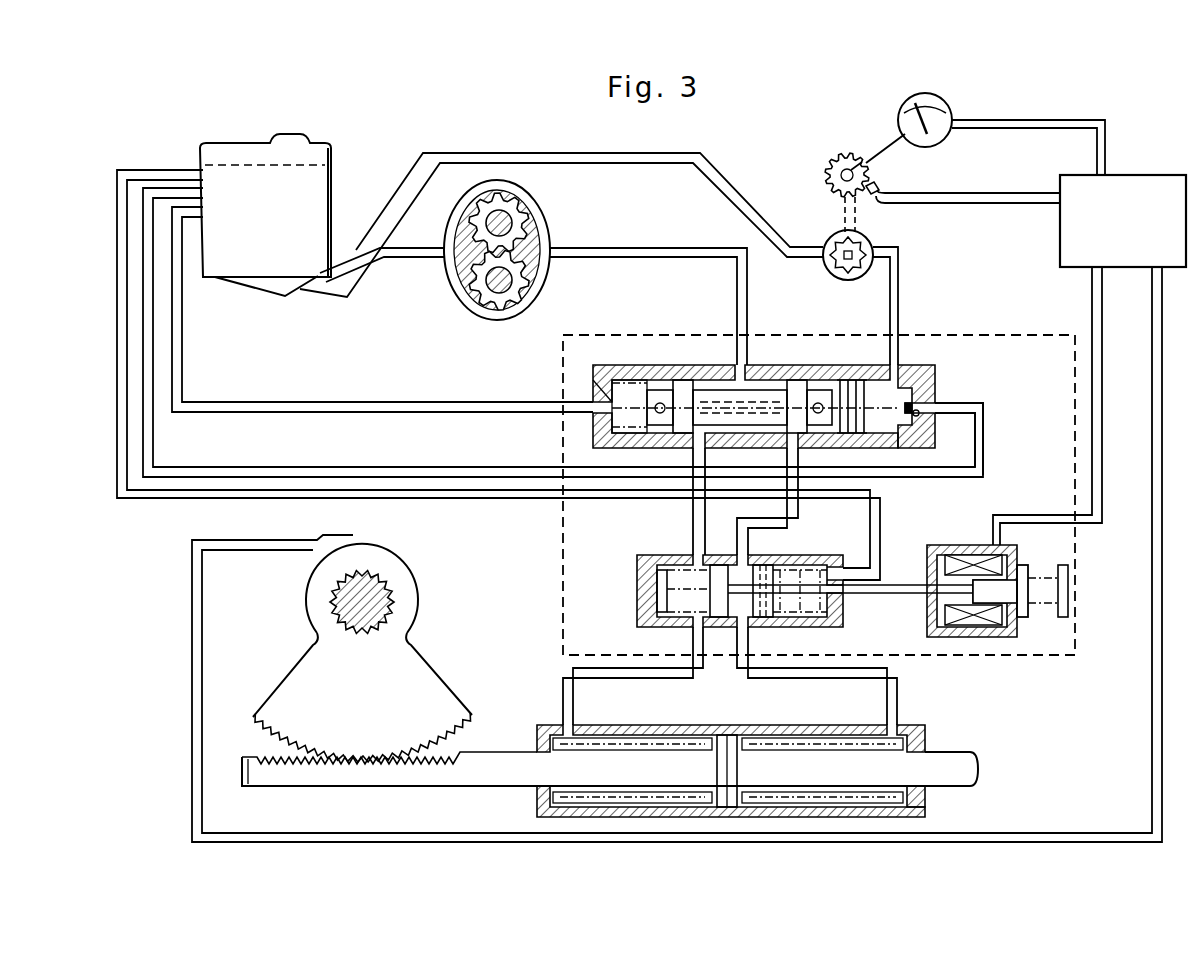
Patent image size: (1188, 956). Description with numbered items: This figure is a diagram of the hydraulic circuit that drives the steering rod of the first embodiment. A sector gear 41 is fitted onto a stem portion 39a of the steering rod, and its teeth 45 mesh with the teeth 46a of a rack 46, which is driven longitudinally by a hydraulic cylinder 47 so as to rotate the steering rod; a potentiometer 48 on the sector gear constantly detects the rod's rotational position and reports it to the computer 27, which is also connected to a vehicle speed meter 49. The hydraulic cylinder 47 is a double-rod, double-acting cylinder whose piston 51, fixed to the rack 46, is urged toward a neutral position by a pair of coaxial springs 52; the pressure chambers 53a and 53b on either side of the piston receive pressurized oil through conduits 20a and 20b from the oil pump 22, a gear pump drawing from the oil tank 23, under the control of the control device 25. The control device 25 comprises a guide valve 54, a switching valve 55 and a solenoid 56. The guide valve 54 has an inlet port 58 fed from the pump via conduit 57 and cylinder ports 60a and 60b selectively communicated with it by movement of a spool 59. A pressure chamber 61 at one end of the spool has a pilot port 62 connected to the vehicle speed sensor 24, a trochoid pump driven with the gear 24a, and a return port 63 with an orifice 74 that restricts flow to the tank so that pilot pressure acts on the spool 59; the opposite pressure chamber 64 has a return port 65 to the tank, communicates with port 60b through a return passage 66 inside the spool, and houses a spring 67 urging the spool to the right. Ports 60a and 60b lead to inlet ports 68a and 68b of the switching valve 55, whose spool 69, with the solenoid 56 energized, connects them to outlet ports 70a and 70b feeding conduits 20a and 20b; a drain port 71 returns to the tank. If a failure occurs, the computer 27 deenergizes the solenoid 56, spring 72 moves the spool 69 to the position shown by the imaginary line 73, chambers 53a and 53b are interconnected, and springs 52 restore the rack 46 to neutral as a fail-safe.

The conduit 20a is at (630, 682).
The conduit 20b is at (805, 682).
The oil pump 22 is at (528, 197).
The oil tank 23 is at (333, 191).
The vehicle speed sensor 24 is at (823, 241).
The valve drive gear 24a is at (838, 146).
The control device 25 is at (563, 351).
The computer 27 is at (1060, 230).
The stem portion 39a is at (394, 584).
The sector gear 41 is at (341, 636).
The teeth 45 is at (275, 734).
The rack 46 is at (610, 774).
The teeth 46a is at (444, 753).
The hydraulic cylinder 47 is at (724, 753).
The potentiometer 48 is at (373, 543).
The vehicle speed meter 49 is at (949, 98).
The piston 51 is at (730, 735).
The springs 52 is at (593, 725).
The pressure chamber 53a is at (573, 821).
The pressure chamber 53b is at (873, 819).
The guide valve 54 is at (789, 383).
The switching valve 55 is at (777, 587).
The solenoid 56 is at (953, 545).
The conduit 57 is at (748, 288).
The inlet port 58 is at (748, 366).
The spool 59 is at (805, 365).
The cylinder port 60a is at (693, 453).
The cylinder port 60b is at (798, 453).
The pressure chamber 61 is at (932, 388).
The pilot port 62 is at (903, 392).
The return port 63 is at (950, 404).
The pressure chamber 64 is at (596, 427).
The return port 65 is at (604, 402).
The return passage 66 is at (712, 402).
The spring 67 is at (625, 380).
The inlet port 68a is at (697, 553).
The inlet port 68b is at (755, 547).
The spool 69 is at (723, 565).
The outlet port 70a is at (697, 630).
The outlet port 70b is at (751, 631).
The drain port 71 is at (846, 572).
The spring 72 is at (665, 600).
The imaginary line 73 is at (778, 608).
The orifice 74 is at (924, 415).